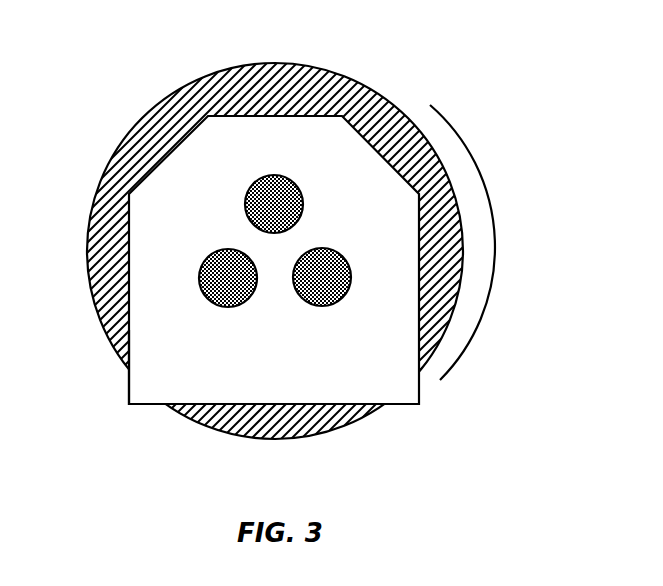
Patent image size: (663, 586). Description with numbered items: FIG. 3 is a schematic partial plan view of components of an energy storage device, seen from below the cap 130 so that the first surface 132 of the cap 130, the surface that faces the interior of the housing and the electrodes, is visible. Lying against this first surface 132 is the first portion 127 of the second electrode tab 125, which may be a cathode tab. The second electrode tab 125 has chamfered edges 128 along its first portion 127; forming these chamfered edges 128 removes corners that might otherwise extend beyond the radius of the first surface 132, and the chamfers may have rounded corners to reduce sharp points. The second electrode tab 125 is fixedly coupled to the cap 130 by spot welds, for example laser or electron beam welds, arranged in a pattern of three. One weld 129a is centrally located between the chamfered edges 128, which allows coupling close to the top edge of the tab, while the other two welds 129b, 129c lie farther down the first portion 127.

The second electrode tab 125 is at (128, 392).
The first portion 127 is at (128, 268).
The chamfered edges 128 is at (386, 152).
The weld 129a is at (302, 214).
The weld 129b is at (318, 306).
The weld 129c is at (232, 307).
The cap 130 is at (383, 96).
The first surface 132 is at (465, 243).